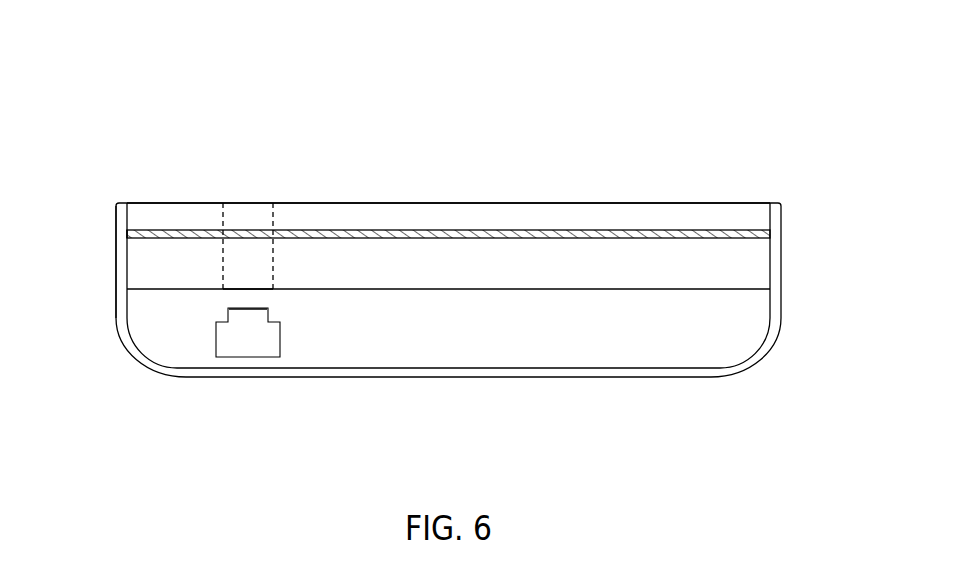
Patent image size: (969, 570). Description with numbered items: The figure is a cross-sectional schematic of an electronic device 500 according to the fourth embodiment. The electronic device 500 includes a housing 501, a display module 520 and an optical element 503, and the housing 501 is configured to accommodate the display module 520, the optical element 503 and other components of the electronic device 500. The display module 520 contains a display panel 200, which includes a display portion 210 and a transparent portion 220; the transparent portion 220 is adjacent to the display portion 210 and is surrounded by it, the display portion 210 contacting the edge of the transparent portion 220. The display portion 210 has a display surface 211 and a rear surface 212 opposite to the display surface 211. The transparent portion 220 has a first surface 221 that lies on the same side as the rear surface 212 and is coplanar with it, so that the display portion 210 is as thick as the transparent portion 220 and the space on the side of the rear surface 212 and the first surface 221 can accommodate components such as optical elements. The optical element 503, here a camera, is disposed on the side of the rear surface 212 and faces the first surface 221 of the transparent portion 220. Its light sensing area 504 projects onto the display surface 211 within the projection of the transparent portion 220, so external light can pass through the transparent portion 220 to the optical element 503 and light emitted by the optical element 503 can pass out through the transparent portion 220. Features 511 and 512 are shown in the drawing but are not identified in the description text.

The electronic device 500 is at (473, 50).
The display panel 200 is at (762, 281).
The display portion 210 is at (707, 262).
The display surface 211 is at (393, 230).
The rear surface 212 is at (482, 290).
The transparent portion 220 is at (263, 267).
The first surface 221 is at (267, 291).
The housing 501 is at (118, 305).
The optical element 503 is at (223, 345).
The light sensing area 504 is at (245, 315).
The cover plate 511 is at (560, 215).
The opening 512 is at (229, 227).
The display module 520 is at (132, 234).